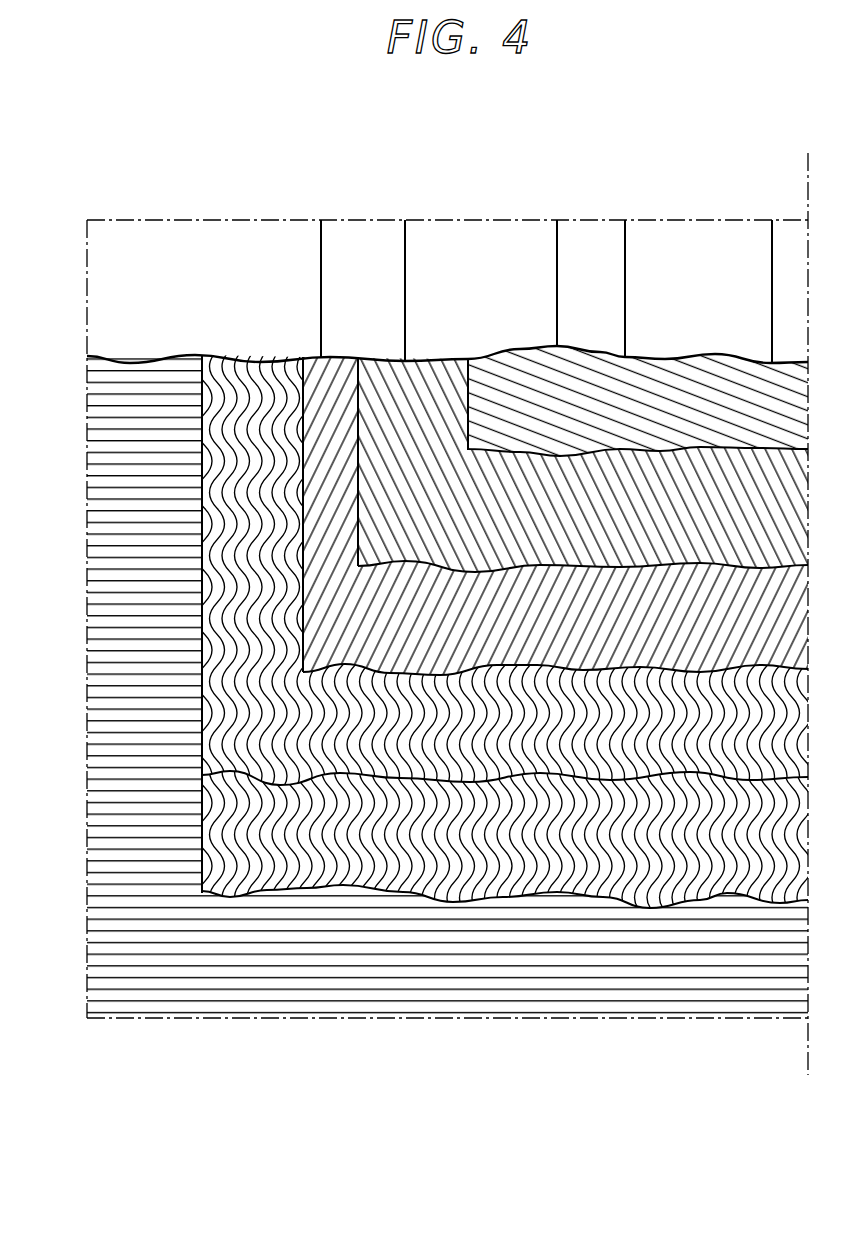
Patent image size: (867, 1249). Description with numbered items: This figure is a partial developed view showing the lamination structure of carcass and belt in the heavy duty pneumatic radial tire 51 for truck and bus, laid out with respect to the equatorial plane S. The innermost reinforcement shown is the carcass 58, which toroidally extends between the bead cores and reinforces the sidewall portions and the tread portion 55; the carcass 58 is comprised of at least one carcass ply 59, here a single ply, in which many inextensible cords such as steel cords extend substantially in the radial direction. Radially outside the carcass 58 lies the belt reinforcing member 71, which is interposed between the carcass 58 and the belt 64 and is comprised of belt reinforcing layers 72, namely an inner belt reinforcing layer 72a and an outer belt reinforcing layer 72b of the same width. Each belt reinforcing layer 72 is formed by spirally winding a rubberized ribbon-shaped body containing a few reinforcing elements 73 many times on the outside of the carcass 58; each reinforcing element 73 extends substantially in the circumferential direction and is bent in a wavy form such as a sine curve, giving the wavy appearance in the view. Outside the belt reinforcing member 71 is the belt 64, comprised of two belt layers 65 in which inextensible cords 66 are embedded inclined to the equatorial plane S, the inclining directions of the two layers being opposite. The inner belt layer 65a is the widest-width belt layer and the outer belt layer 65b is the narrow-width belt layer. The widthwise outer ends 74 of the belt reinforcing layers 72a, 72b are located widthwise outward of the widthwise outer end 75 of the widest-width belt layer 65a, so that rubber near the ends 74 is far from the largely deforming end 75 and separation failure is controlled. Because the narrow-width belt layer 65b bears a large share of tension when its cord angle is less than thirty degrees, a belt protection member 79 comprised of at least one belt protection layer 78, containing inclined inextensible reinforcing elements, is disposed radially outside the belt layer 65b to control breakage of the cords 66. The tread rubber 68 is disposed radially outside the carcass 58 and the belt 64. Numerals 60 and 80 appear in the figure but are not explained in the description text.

The heavy duty pneumatic radial tire 51 is at (265, 215).
The equatorial plane S is at (805, 195).
The tread portion 55 is at (480, 219).
The tread rubber 68 is at (508, 240).
The carcass 58 is at (235, 1020).
The carcass ply 59 is at (340, 1005).
The magnetic pole portion 60 is at (478, 978).
The belt 64 is at (374, 354).
The belt layer 65 is at (437, 383).
The inner belt layer 65a is at (336, 362).
The outer belt layer 65b is at (457, 360).
The cords 66 is at (325, 397).
The belt reinforcing member 71 is at (565, 897).
The belt reinforcing layer 72 is at (625, 897).
The inner belt reinforcing layer 72a is at (677, 897).
The outer belt reinforcing layer 72b is at (197, 368).
The reinforcing element 73 is at (218, 382).
The widthwise outer ends of the belt reinforcing layers 74 is at (200, 420).
The widthwise outer end of the widest-width belt layer 75 is at (278, 387).
The belt protection layer 78 is at (723, 367).
The belt protection member 79 is at (648, 353).
The nonmagnetic layer 80 is at (583, 375).